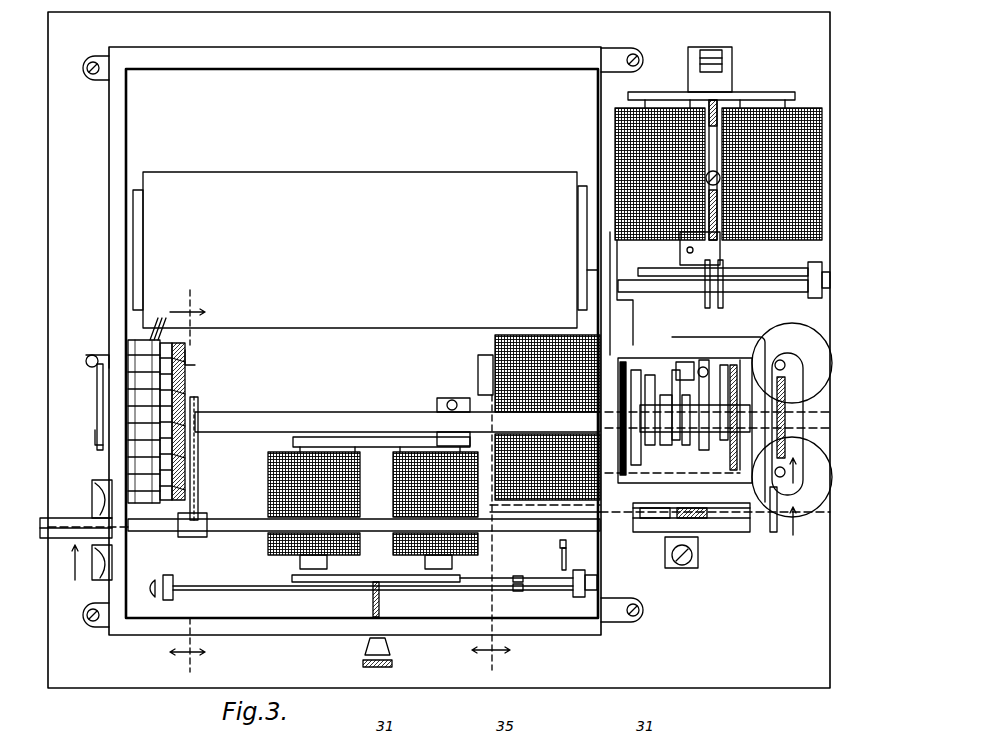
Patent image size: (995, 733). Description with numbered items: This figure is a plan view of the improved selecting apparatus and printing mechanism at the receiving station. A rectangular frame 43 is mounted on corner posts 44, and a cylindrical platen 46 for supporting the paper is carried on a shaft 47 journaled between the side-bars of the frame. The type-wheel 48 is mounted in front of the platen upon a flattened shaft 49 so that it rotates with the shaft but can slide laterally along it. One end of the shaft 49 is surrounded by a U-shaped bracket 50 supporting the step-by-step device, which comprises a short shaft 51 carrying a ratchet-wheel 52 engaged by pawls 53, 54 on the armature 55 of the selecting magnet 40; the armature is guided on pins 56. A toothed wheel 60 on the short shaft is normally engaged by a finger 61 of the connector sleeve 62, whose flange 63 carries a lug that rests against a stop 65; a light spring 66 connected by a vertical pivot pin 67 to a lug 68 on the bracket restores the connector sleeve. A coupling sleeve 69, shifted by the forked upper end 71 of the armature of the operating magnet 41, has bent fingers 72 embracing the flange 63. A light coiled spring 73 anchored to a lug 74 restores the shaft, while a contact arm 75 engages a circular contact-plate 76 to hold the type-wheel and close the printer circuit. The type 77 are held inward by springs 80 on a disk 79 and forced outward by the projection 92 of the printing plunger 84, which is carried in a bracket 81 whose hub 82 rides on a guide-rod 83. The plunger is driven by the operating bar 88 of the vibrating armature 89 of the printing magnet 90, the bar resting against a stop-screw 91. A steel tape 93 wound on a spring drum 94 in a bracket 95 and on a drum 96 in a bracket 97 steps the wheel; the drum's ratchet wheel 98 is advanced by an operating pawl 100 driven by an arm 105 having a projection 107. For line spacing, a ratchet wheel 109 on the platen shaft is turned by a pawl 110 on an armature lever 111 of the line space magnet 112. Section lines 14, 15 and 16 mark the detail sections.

The section line 14— 14 is at (187, 481).
The section line 15— 15 is at (442, 543).
The section line 16— 16 is at (491, 532).
The shifting or selecting magnet 40 is at (795, 507).
The operating magnet 41 is at (493, 357).
The rectangular frame 43 is at (127, 128).
The corner posts 44 is at (93, 81).
The cylindrical platen 46 is at (358, 172).
The platen shaft 47 is at (587, 248).
The type-wheel 48 is at (172, 359).
The type-wheel shaft 49 is at (270, 412).
The U-shaped bracket 50 is at (714, 300).
The short shaft 51 is at (718, 409).
The ratchet-wheel 52 is at (717, 429).
The pawl 53 is at (782, 367).
The pawl 54 is at (772, 502).
The armature 55 is at (787, 374).
The pins 56 is at (795, 337).
The toothed wheel 60 is at (665, 382).
The lug or finger 61 is at (724, 371).
The connector sleeve 62 is at (710, 441).
The flange 63 is at (670, 446).
The stop 65 is at (683, 362).
The light spring 66 is at (704, 420).
The vertical pivot pin 67 is at (740, 360).
The lug 68 is at (703, 367).
The coupling sleeve 69 is at (645, 470).
The forked upper end 71 is at (655, 446).
The bent fingers 72 is at (635, 367).
The light coiled spring 73 is at (97, 437).
The lug 74 is at (95, 367).
The contact arm 75 is at (612, 368).
The circular contact-plate 76 is at (620, 482).
The type 77 is at (185, 427).
The disk 79 is at (128, 350).
The springs 80 is at (158, 318).
The bracket 81 is at (198, 494).
The hub 82 is at (207, 516).
The guide-rod 83 is at (238, 531).
The printing plunger 84 is at (180, 385).
The operating bar 88 is at (262, 591).
The vibrating armature 89 is at (340, 578).
The printing magnet 90 is at (430, 452).
The stop-screw 91 is at (380, 609).
The lug or projection 92 is at (200, 367).
The steel tape 93 is at (60, 521).
The spring drum 94 is at (92, 529).
The bracket 95 is at (95, 487).
The drum 96 is at (735, 532).
The bracket 97 is at (705, 562).
The ratchet wheel 98 is at (700, 527).
The operating pawl 100 is at (658, 522).
The arm 105 is at (560, 561).
The projection 107 is at (560, 545).
The ratchet wheel 109 is at (680, 254).
The pawl 110 is at (712, 287).
The armature lever 111 is at (725, 293).
The line space magnet 112 is at (738, 108).